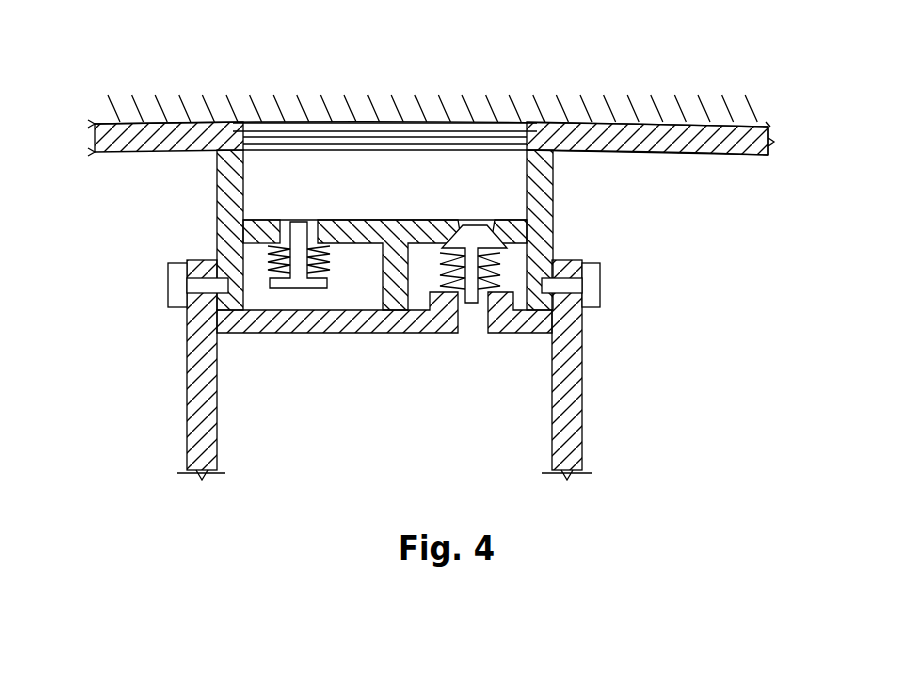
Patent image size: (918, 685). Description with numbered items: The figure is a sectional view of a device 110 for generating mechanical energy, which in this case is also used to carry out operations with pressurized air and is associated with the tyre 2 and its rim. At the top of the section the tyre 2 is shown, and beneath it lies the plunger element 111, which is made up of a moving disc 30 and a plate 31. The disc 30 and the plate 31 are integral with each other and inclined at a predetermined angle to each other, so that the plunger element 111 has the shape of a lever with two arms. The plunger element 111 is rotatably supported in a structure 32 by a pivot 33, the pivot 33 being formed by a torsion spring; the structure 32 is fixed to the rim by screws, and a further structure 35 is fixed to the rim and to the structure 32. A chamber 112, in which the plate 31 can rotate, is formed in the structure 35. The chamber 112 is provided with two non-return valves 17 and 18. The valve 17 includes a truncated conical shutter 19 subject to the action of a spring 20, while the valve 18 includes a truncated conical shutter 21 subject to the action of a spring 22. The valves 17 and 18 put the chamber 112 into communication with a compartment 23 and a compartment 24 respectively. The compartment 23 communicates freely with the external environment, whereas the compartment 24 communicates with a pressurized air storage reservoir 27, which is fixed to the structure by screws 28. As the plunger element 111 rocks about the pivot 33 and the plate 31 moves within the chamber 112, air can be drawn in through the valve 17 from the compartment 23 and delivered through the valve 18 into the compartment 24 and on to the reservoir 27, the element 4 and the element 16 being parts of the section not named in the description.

The tyre 2 is at (757, 108).
The housing plate 4 is at (700, 125).
The cover layer 16 is at (415, 125).
The moving disc 30 is at (340, 131).
The pivot 33 is at (508, 125).
The structure 32 is at (690, 156).
The device for generating mechanical energy 110 is at (460, 120).
The plunger element 111 is at (377, 120).
The structure 35 is at (217, 190).
The chamber 112 is at (555, 187).
The plate 31 is at (325, 165).
The non-return valve 17 is at (331, 243).
The non-return valve 18 is at (500, 233).
The truncated conical shutter 19 is at (302, 223).
The spring 20 is at (290, 268).
The truncated conical shutter 21 is at (470, 224).
The spring 22 is at (462, 258).
The compartment 23 is at (190, 333).
The compartment 24 is at (582, 320).
The pressurized air storage reservoir 27 is at (510, 397).
The screws 28 is at (168, 285).